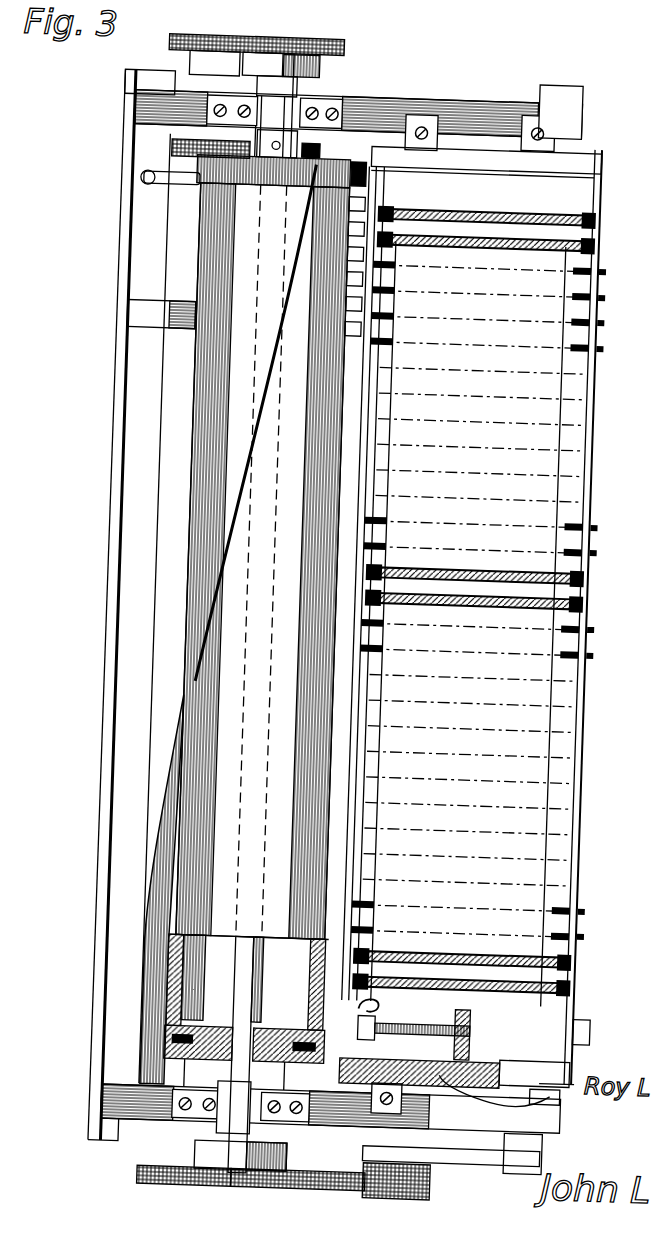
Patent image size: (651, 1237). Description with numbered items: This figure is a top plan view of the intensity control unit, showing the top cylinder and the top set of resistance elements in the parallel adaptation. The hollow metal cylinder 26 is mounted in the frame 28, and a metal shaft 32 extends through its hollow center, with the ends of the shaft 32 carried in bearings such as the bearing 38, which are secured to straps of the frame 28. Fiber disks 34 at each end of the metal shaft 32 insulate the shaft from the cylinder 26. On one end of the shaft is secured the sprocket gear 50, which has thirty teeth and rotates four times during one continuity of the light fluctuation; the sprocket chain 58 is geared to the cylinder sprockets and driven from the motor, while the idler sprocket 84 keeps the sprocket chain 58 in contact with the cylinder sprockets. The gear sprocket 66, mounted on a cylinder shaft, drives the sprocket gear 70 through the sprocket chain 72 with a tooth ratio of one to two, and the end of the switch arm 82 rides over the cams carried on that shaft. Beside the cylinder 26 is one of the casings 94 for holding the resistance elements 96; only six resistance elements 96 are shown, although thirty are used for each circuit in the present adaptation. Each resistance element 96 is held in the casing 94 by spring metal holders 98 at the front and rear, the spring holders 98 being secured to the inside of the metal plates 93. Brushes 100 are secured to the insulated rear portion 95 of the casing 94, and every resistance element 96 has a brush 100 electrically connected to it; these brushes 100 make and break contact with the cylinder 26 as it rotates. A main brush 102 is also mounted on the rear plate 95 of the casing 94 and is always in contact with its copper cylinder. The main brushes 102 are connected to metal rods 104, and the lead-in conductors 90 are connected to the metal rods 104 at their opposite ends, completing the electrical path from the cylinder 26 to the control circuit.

The hollow cylinder 26 is at (200, 216).
The frame 28 is at (111, 124).
The metal shaft 32 is at (265, 955).
The fiber disk 34 is at (287, 1029).
The bearing 38 is at (293, 110).
The sprocket gear 50 is at (162, 1185).
The sprocket chain 58 is at (266, 1181).
The gear sprocket 66 is at (291, 46).
The sprocket gear 70 is at (182, 48).
The sprocket chain 72 is at (228, 47).
The switch arm 82 is at (143, 179).
The idler sprocket 84 is at (450, 1192).
The lead-in conductor 90 is at (560, 1091).
The metal plate 93 is at (587, 395).
The resistance casing 94 is at (464, 172).
The insulated rear portion 95 is at (340, 638).
The resistance element 96 is at (492, 240).
The spring metal holder 98 is at (383, 203).
The brush 100 is at (357, 310).
The main brush 102 is at (341, 1085).
The metal rod 104 is at (432, 1035).